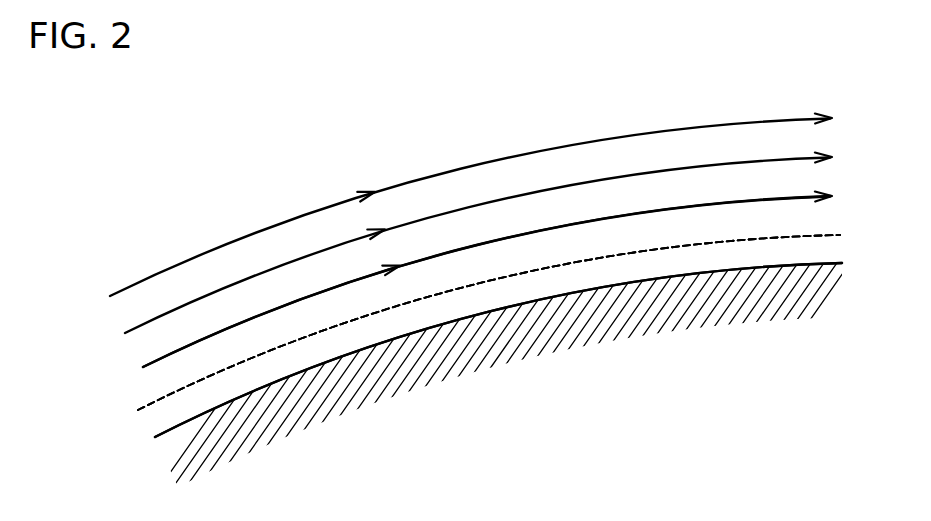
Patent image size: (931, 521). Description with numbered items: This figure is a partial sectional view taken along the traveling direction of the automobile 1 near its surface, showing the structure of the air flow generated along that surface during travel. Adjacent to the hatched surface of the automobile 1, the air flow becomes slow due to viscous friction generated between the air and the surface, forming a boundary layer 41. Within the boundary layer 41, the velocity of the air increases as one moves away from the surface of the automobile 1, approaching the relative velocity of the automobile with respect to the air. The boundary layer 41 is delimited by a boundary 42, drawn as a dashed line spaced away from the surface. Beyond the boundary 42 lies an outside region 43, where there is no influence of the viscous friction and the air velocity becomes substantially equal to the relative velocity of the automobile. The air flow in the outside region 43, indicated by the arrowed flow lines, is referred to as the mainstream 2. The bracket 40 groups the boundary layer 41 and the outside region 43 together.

The automobile 1 is at (157, 438).
The mainstream 2 is at (722, 202).
The coating film 40 is at (440, 321).
The boundary layer 41 is at (144, 410).
The boundary 42 is at (802, 235).
The outside region 43 is at (92, 308).